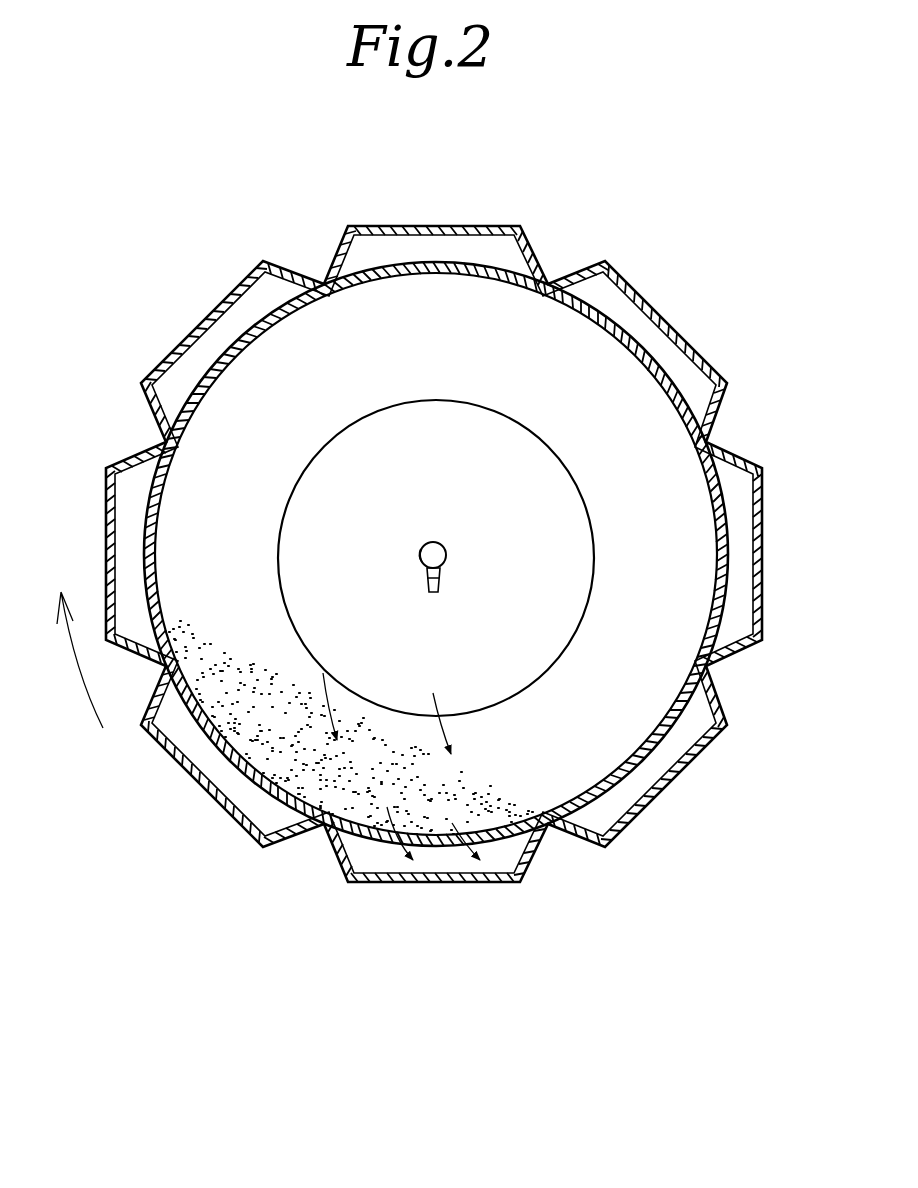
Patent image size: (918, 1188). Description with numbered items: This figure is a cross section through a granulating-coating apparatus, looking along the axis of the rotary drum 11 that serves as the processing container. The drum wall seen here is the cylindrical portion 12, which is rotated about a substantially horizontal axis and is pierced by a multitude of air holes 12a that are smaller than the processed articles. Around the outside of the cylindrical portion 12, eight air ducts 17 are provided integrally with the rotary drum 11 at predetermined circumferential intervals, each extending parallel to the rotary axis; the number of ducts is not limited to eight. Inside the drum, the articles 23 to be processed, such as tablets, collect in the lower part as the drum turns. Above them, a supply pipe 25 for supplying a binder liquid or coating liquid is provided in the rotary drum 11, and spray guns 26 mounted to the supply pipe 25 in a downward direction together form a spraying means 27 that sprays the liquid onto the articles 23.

The rotary drum 11 is at (598, 298).
The cylindrical portion 12 is at (717, 477).
The air holes 12a is at (640, 352).
The air ducts 17 is at (170, 377).
The articles to be processed 23 is at (365, 800).
The supply pipe 25 is at (437, 547).
The spray guns 26 is at (438, 576).
The spraying means 27 is at (422, 548).